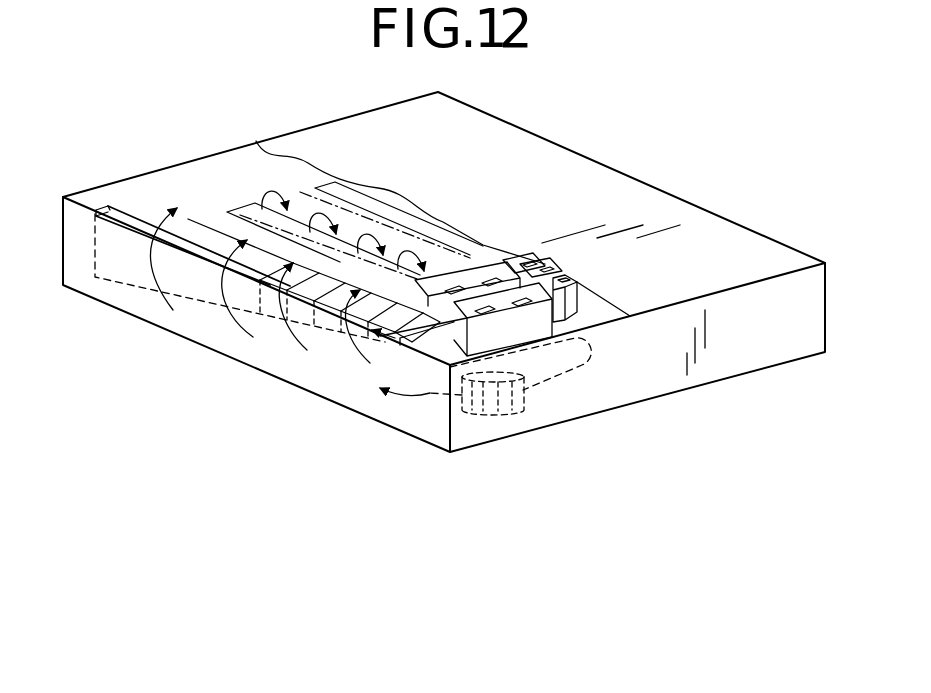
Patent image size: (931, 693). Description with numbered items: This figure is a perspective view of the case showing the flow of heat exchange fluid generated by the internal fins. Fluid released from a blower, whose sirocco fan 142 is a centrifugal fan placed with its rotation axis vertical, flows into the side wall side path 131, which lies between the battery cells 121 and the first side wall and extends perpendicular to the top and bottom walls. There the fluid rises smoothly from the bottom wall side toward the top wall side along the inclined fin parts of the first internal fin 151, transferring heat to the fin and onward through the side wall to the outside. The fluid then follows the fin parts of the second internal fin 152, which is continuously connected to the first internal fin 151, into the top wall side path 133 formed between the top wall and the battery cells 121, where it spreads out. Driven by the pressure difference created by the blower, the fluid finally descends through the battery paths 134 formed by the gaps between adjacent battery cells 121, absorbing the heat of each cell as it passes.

The battery cell 121 is at (443, 267).
The side wall side path 131 is at (347, 373).
The top wall side path 133 is at (157, 195).
The battery path 134 is at (463, 287).
The sirocco fan 142 is at (497, 420).
The first internal fin 151 is at (202, 307).
The second internal fin 152 is at (203, 225).